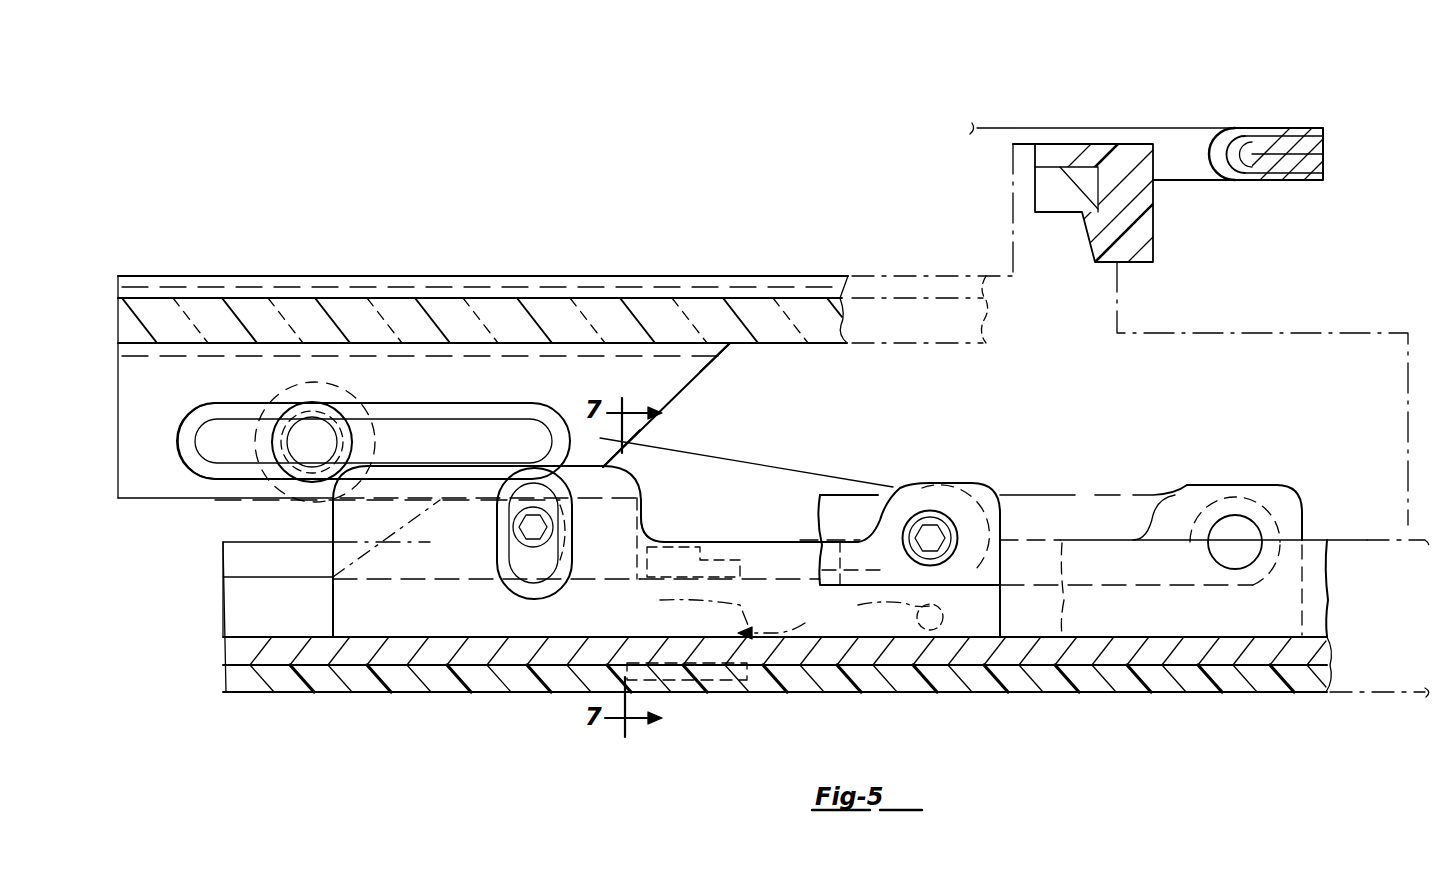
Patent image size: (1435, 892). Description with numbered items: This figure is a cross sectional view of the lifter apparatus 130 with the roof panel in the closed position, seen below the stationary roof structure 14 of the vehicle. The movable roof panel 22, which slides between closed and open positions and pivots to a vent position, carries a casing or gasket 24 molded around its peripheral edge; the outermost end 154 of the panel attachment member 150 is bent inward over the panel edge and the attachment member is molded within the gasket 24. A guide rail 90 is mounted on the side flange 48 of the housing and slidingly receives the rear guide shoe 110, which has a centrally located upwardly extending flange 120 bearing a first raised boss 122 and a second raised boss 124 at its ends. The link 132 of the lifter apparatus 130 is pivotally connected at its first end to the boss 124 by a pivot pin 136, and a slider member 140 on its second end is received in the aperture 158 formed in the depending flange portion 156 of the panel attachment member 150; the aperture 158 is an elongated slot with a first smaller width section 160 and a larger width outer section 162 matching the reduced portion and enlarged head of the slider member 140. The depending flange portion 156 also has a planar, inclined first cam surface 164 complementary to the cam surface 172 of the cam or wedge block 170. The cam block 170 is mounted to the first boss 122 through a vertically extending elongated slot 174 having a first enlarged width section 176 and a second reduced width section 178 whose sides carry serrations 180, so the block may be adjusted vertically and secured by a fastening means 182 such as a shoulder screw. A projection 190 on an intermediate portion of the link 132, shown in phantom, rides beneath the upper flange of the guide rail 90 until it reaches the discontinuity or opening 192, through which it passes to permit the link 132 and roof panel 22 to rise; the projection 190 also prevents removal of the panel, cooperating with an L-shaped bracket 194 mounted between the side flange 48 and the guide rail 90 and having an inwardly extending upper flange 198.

The stationary roof structure 14 is at (1284, 100).
The movable roof panel 22 is at (508, 238).
The casing or gasket 24 is at (643, 238).
The side flange 48 is at (263, 686).
The guide rail 90 is at (188, 545).
The rear guide shoe 110 is at (787, 572).
The upwardly extending flange 120 is at (681, 518).
The first raised boss 122 is at (455, 432).
The second raised boss 124 is at (998, 452).
The lifter apparatus 130 is at (885, 407).
The link 132 is at (848, 470).
The pivot pin 136 is at (1000, 522).
The slider member 140 is at (325, 425).
The panel attachment member 150 is at (690, 390).
The outermost end 154 is at (762, 290).
The depending flange portion 156 is at (650, 406).
The aperture 158 is at (222, 430).
The first smaller width section 160 is at (205, 447).
The larger width outer section 162 is at (200, 425).
The first cam surface 164 is at (700, 352).
The cam or wedge block 170 is at (412, 490).
The cam surface 172 is at (355, 545).
The elongated slot 174 is at (545, 598).
The first enlarged width section 176 is at (503, 555).
The second reduced width section 178 is at (553, 575).
The serrations 180 is at (630, 655).
The fastening means 182 is at (533, 530).
The projection 190 is at (795, 617).
The discontinuity or opening 192 is at (785, 477).
The L-shaped member or bracket 194 is at (791, 616).
The inwardly extending upper flange 198 is at (720, 540).